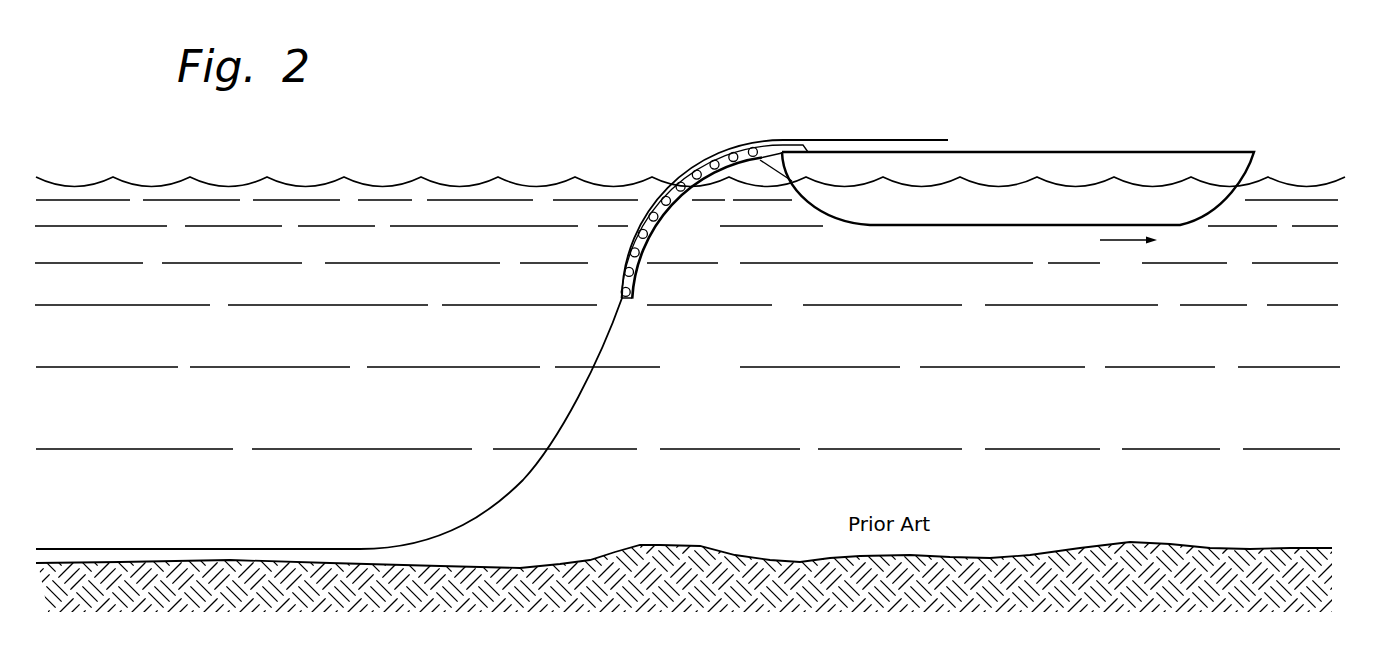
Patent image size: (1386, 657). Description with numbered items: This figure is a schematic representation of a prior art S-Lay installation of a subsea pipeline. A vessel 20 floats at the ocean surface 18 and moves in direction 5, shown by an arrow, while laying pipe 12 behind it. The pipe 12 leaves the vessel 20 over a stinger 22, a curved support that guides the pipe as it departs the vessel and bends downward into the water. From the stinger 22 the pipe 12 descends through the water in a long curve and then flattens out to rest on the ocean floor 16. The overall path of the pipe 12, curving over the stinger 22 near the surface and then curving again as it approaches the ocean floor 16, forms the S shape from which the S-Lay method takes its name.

The direction 5 is at (1121, 244).
The pipe 12 is at (467, 522).
The ocean floor 16 is at (525, 567).
The ocean surface 18 is at (368, 184).
The vessel 20 is at (1142, 151).
The stinger 22 is at (650, 241).